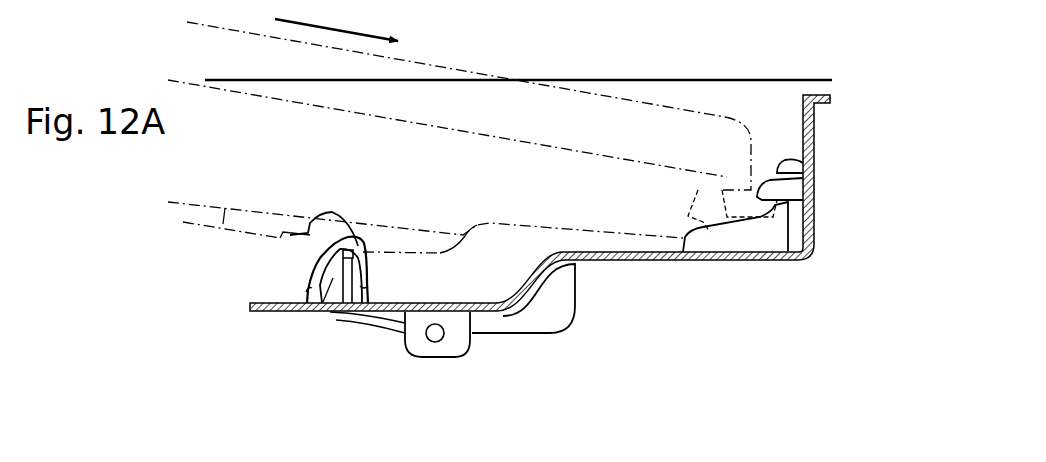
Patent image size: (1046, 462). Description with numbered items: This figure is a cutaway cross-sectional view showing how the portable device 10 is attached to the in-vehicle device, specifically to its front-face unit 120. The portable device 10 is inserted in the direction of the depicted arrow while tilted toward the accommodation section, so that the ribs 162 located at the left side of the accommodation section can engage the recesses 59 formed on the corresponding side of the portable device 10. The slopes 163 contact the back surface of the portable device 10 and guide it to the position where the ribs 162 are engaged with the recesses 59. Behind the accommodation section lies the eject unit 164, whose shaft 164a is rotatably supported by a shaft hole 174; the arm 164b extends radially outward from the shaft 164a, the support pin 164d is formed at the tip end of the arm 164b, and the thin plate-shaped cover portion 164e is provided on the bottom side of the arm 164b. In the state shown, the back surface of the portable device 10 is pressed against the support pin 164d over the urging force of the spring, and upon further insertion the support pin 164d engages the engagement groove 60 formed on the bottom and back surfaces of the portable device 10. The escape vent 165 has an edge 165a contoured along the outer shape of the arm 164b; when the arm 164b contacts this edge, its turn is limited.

The portable device 10 is at (638, 94).
The front-face unit 120 is at (763, 78).
The recess 59 is at (815, 237).
The engagement groove 60 is at (243, 215).
The support pin 164d is at (313, 222).
The escape vent 165 is at (315, 292).
The edge 165a is at (370, 290).
The cover portion 164e is at (323, 312).
The arm 164b is at (342, 313).
The eject unit 164 is at (394, 334).
The shaft 164a is at (435, 344).
The shaft hole 174 is at (443, 336).
The rib 162 is at (780, 190).
The slope 163 is at (740, 243).